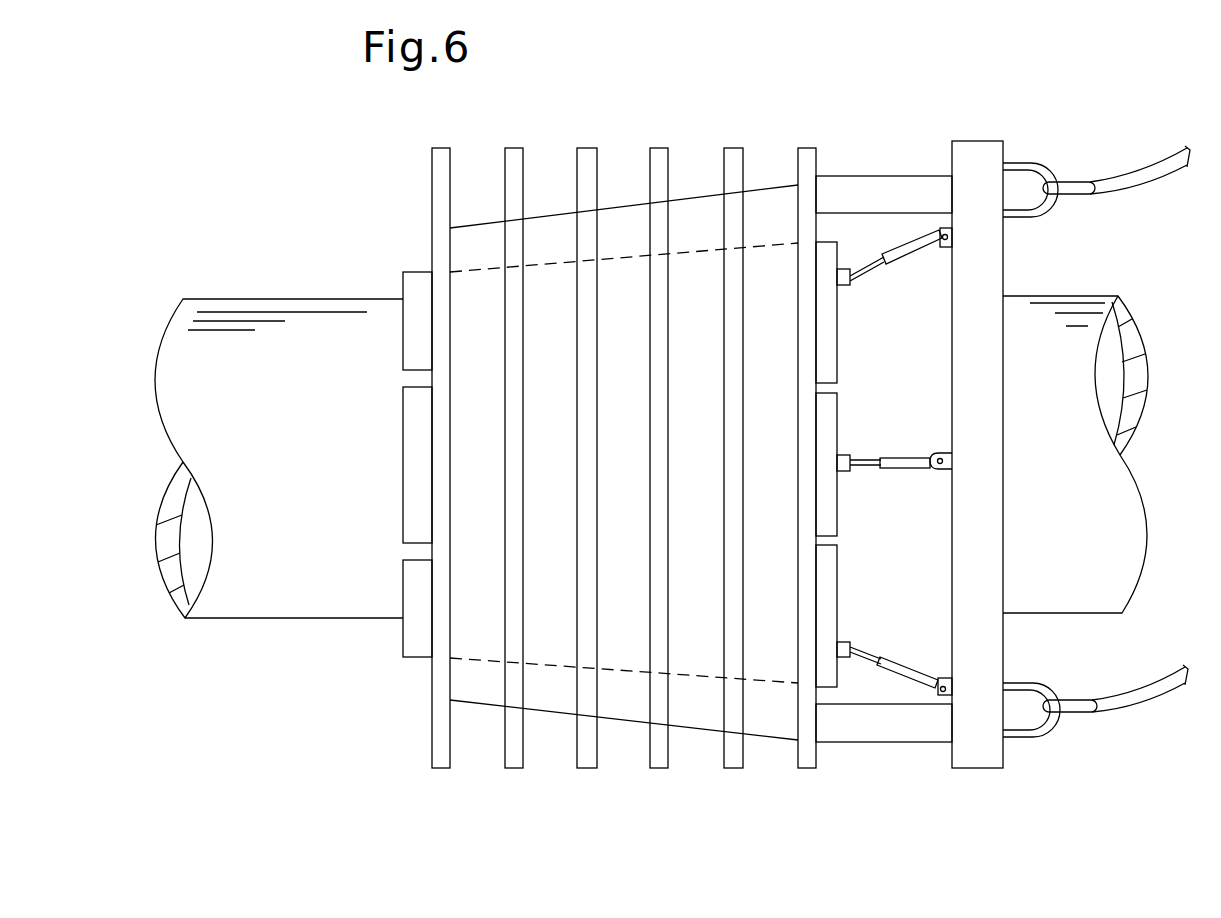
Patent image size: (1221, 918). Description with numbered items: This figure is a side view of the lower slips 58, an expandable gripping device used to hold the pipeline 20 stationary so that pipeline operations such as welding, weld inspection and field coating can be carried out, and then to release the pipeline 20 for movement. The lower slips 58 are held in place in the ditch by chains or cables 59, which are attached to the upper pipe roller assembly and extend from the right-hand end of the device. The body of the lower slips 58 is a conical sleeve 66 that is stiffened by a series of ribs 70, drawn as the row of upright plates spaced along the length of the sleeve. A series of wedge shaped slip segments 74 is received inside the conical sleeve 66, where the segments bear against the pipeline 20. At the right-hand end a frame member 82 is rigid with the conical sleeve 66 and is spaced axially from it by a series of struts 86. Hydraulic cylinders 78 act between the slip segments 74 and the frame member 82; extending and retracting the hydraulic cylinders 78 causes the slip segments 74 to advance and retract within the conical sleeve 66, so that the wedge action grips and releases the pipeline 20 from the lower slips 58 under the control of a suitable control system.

The pipeline 20 is at (233, 293).
The lower slips 58 is at (742, 132).
The chains or cables 59 is at (1120, 182).
The conical sleeve 66 is at (480, 693).
The ribs 70 is at (438, 768).
The slip segments 74 is at (402, 572).
The hydraulic cylinders 78 is at (918, 463).
The frame member 82 is at (992, 527).
The struts 86 is at (890, 733).